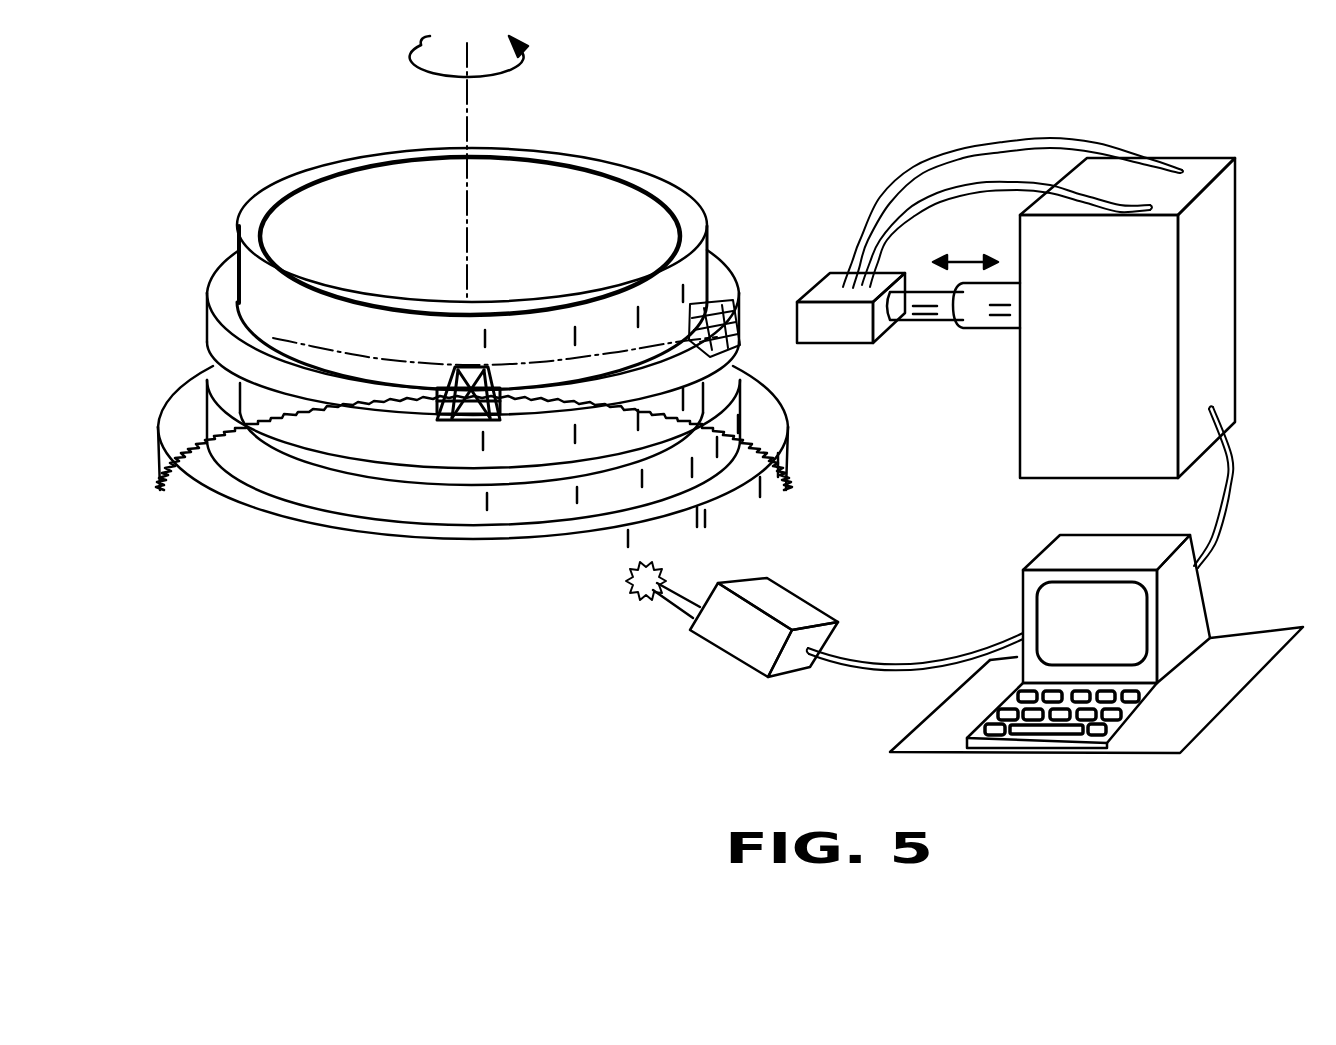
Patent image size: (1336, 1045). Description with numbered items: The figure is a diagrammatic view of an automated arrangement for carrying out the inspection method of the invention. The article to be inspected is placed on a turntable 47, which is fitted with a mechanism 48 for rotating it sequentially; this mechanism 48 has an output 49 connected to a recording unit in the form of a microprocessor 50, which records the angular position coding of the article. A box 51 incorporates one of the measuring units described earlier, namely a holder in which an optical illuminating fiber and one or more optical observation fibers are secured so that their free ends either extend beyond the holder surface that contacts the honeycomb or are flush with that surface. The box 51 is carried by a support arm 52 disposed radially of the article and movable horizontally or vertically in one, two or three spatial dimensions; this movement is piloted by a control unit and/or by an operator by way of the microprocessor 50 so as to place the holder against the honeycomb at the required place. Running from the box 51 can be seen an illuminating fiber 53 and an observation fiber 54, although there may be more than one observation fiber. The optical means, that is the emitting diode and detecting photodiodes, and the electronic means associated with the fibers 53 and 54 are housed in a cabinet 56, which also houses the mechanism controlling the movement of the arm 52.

The turntable 47 is at (310, 562).
The mechanism 48 is at (817, 607).
The output 49 is at (877, 664).
The microprocessor 50 is at (1033, 596).
The box 51 is at (832, 335).
The support arm 52 is at (947, 312).
The illuminating fiber 53 is at (1002, 183).
The observation fiber 54 is at (1004, 142).
The cabinet 56 is at (1230, 357).